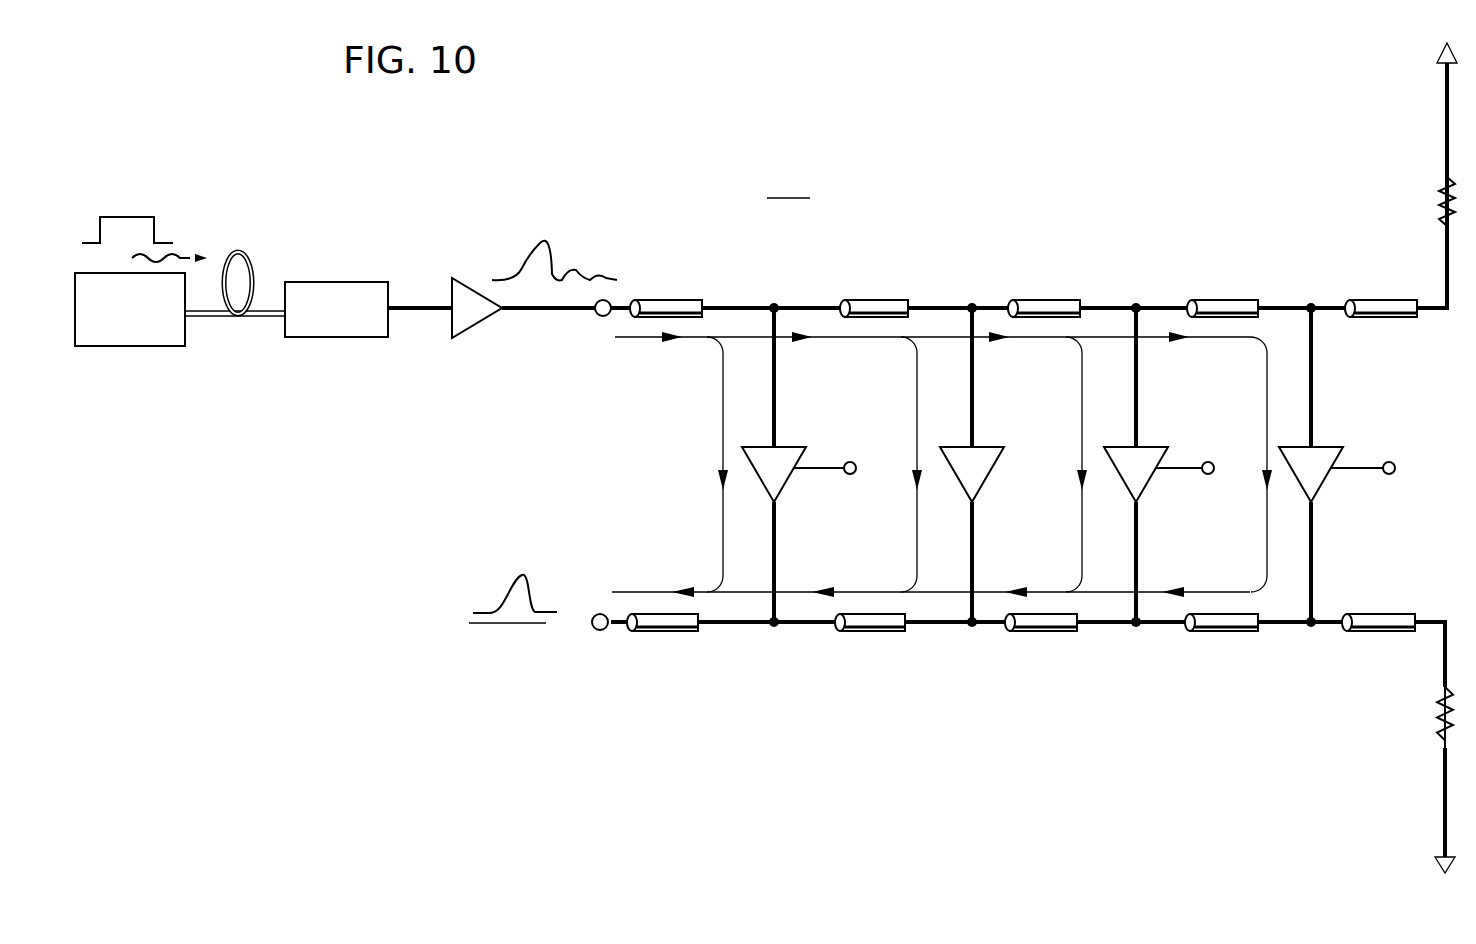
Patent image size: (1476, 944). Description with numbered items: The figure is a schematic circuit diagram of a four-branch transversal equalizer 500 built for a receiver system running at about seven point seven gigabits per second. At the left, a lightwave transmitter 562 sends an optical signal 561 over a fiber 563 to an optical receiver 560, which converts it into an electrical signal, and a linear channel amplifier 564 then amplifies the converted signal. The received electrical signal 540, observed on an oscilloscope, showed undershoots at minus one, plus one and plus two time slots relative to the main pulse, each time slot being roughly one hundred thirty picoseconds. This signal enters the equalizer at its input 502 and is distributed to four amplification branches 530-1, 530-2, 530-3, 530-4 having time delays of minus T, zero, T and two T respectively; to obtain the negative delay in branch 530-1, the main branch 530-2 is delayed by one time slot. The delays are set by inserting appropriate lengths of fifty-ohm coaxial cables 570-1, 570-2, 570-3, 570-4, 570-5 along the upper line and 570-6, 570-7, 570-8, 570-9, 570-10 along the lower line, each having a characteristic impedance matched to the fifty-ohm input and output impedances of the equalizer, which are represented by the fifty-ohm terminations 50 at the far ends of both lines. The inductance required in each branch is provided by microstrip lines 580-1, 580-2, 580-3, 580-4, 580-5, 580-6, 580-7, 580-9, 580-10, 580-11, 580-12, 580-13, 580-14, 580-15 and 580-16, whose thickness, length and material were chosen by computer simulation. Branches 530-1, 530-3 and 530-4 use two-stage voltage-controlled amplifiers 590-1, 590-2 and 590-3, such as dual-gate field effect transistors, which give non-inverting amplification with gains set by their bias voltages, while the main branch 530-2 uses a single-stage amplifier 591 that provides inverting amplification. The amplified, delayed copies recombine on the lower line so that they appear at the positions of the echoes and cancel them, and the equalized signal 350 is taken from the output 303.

The optical signal 561 is at (144, 226).
The lightwave transmitter 562 is at (165, 343).
The fiber 563 is at (240, 250).
The optical receiver 560 is at (363, 340).
The linear channel amplifier 564 is at (458, 340).
The received electrical signal 540 is at (545, 240).
The input port 502 is at (597, 318).
The transversal equalizer 500 is at (788, 185).
The equalized output pulse 350 is at (520, 572).
The output port 303 is at (605, 633).
The coaxial cable 570-1 is at (668, 298).
The coaxial cable 570-2 is at (878, 298).
The coaxial cable 570-3 is at (1040, 298).
The coaxial cable 570-4 is at (1218, 298).
The coaxial cable 570-5 is at (1390, 298).
The coaxial cable 570-6 is at (658, 633).
The coaxial cable 570-7 is at (877, 633).
The coaxial cable 570-8 is at (1053, 633).
The coaxial cable 570-9 is at (1228, 633).
The coaxial cable 570-10 is at (1405, 612).
The microstrip line 580-1 is at (747, 305).
The microstrip line 580-2 is at (798, 305).
The microstrip line 580-3 is at (953, 305).
The microstrip line 580-4 is at (988, 305).
The microstrip line 580-5 is at (1118, 305).
The microstrip line 580-6 is at (1148, 305).
The microstrip line 580-7 is at (1295, 305).
The microstrip line 580-9 is at (1325, 305).
The microstrip line 580-10 is at (812, 630).
The microstrip line 580-11 is at (937, 630).
The microstrip line 580-12 is at (990, 630).
The microstrip line 580-13 is at (1112, 630).
The microstrip line 580-14 is at (1163, 630).
The microstrip line 580-15 is at (1292, 630).
The microstrip line 580-16 is at (1332, 630).
The voltage controlled amplifier 590-1 is at (783, 477).
The voltage controlled amplifier 590-2 is at (1145, 483).
The voltage controlled amplifier 590-3 is at (1320, 485).
The amplifier 591 is at (983, 470).
The amplification branch 530-1 is at (697, 464).
The amplification branch 530-2 is at (887, 464).
The amplification branch 530-3 is at (1052, 464).
The amplification branch 530-4 is at (1237, 472).
The fifty ohm impedance 50 is at (1437, 187).